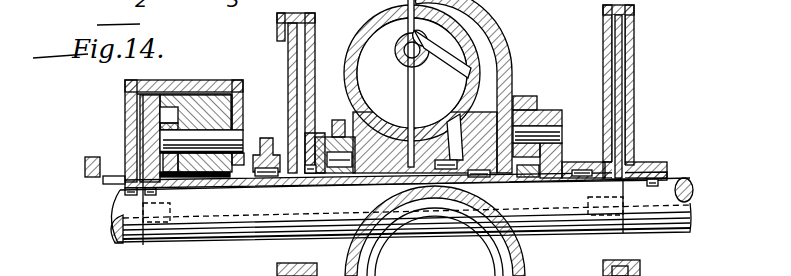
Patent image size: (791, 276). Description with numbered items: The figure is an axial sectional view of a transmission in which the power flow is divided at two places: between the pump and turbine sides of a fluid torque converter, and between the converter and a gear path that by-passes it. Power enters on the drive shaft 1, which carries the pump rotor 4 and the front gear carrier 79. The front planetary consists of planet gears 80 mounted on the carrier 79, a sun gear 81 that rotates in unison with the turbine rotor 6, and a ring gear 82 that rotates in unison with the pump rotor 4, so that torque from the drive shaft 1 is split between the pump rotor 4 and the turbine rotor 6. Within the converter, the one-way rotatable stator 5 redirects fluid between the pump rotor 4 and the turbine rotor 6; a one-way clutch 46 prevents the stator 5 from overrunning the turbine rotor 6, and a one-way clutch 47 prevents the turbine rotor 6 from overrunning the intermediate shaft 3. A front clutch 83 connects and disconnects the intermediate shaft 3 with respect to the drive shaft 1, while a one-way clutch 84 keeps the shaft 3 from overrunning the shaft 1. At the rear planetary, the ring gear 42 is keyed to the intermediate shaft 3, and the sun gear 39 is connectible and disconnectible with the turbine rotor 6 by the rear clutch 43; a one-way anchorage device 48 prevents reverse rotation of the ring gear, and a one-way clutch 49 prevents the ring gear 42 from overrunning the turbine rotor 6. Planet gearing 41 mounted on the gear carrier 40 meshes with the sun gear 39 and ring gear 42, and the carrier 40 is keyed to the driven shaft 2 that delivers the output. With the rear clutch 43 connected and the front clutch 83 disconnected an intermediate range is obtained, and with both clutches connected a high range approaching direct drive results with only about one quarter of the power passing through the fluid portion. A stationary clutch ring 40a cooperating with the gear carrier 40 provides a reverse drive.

The drive shaft 1 is at (677, 216).
The driven shaft 2 is at (133, 245).
The intermediate shaft 3 is at (239, 241).
The pump rotor 4 is at (403, 21).
The stator 5 is at (423, 88).
The turbine rotor 6 is at (462, 53).
The sun gear 39 is at (208, 188).
The gear carrier 40 is at (125, 113).
The stationary clutch ring 40a is at (85, 166).
The planet gearing 41 is at (207, 120).
The ring gear 42 is at (170, 97).
The clutch means 43 is at (277, 42).
The one-way clutch 46 is at (447, 170).
The one-way clutch 47 is at (483, 179).
The one-way anchorage device 48 is at (262, 138).
The one-way clutch 49 is at (312, 180).
The gear carrier 79 is at (551, 113).
The planet gears 80 is at (534, 97).
The sun gear 81 is at (532, 172).
The ring gear 82 is at (525, 96).
The clutch 83 is at (619, 35).
The one-way clutch 84 is at (581, 168).